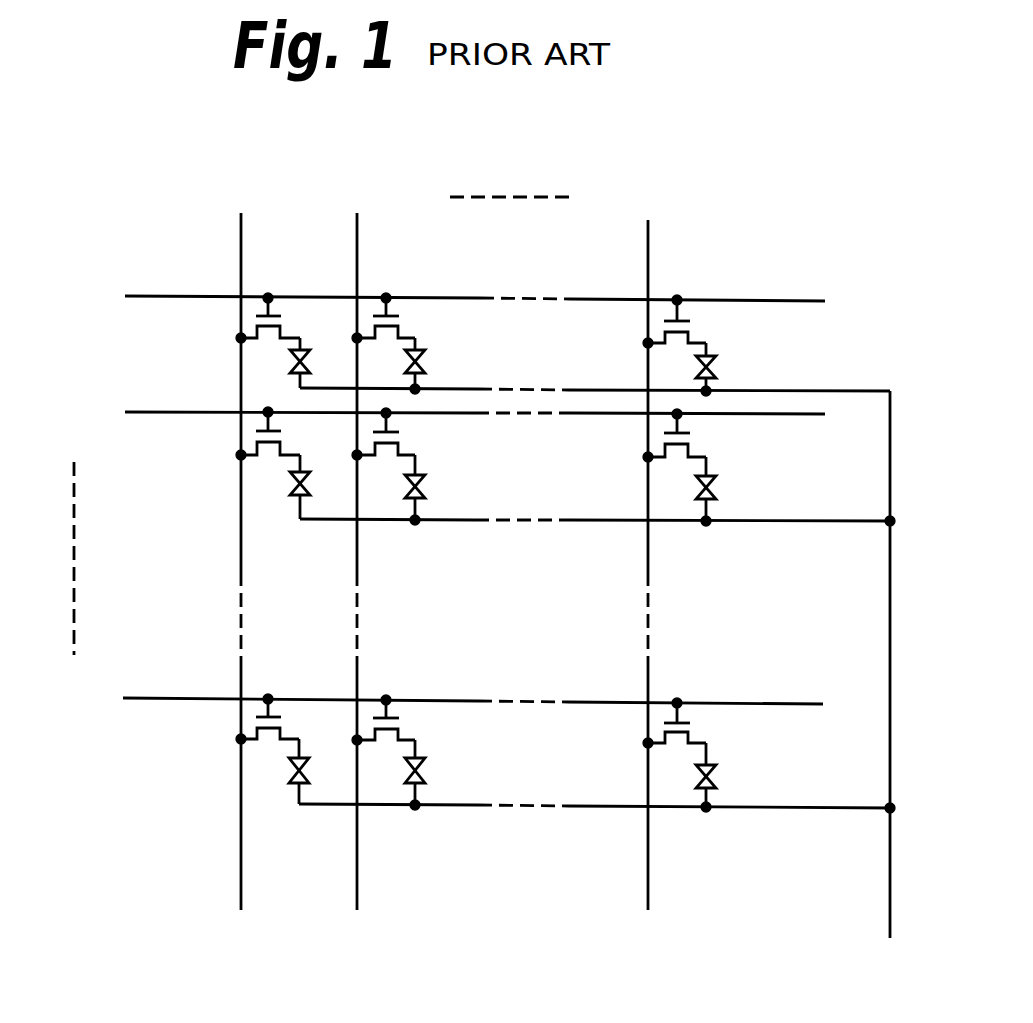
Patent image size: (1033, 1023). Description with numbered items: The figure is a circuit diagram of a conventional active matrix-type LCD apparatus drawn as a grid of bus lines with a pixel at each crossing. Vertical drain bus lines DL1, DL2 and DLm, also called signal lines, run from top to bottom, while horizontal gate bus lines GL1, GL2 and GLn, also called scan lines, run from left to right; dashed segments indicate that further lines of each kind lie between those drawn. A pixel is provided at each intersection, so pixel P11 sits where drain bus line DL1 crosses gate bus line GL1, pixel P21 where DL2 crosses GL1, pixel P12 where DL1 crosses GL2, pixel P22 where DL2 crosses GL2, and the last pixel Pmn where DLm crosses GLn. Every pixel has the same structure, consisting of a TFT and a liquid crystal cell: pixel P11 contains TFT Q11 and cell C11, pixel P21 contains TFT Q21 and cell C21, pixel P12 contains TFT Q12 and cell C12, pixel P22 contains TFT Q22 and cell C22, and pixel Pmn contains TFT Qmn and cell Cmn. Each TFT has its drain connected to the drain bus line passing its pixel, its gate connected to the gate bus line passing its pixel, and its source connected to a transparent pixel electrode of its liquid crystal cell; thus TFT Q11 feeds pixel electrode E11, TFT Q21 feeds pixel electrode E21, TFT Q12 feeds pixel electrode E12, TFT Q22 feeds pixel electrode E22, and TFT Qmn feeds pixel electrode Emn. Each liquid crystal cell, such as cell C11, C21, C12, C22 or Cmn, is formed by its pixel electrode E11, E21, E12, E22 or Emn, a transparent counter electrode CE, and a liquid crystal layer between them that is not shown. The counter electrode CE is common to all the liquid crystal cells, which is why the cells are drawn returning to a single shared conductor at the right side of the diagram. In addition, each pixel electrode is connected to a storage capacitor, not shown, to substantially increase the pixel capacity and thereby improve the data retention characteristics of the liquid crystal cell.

The drain bus line DL1 is at (246, 539).
The drain bus line DL2 is at (356, 539).
The drain bus line DLm is at (644, 540).
The gate bus line GL1 is at (438, 297).
The gate bus line GL2 is at (436, 413).
The gate bus line GLn is at (435, 702).
The transparent counter electrode CE is at (884, 685).
The pixel P11 is at (270, 281).
The TFT Q11 is at (282, 326).
The transparent pixel electrode E11 is at (303, 342).
The liquid crystal cell C11 is at (323, 364).
The pixel P21 is at (484, 286).
The TFT Q21 is at (400, 327).
The transparent pixel electrode E21 is at (419, 340).
The liquid crystal cell C21 is at (440, 366).
The pixel P12 is at (226, 492).
The TFT Q12 is at (293, 433).
The transparent pixel electrode E12 is at (289, 466).
The liquid crystal cell C12 is at (322, 487).
The pixel P22 is at (446, 534).
The TFT Q22 is at (398, 445).
The transparent pixel electrode E22 is at (420, 463).
The liquid crystal cell C22 is at (438, 489).
The pixel Pmn is at (732, 820).
The TFT Qmn is at (692, 732).
The transparent pixel electrode Emn is at (710, 748).
The liquid crystal cell Cmn is at (731, 780).